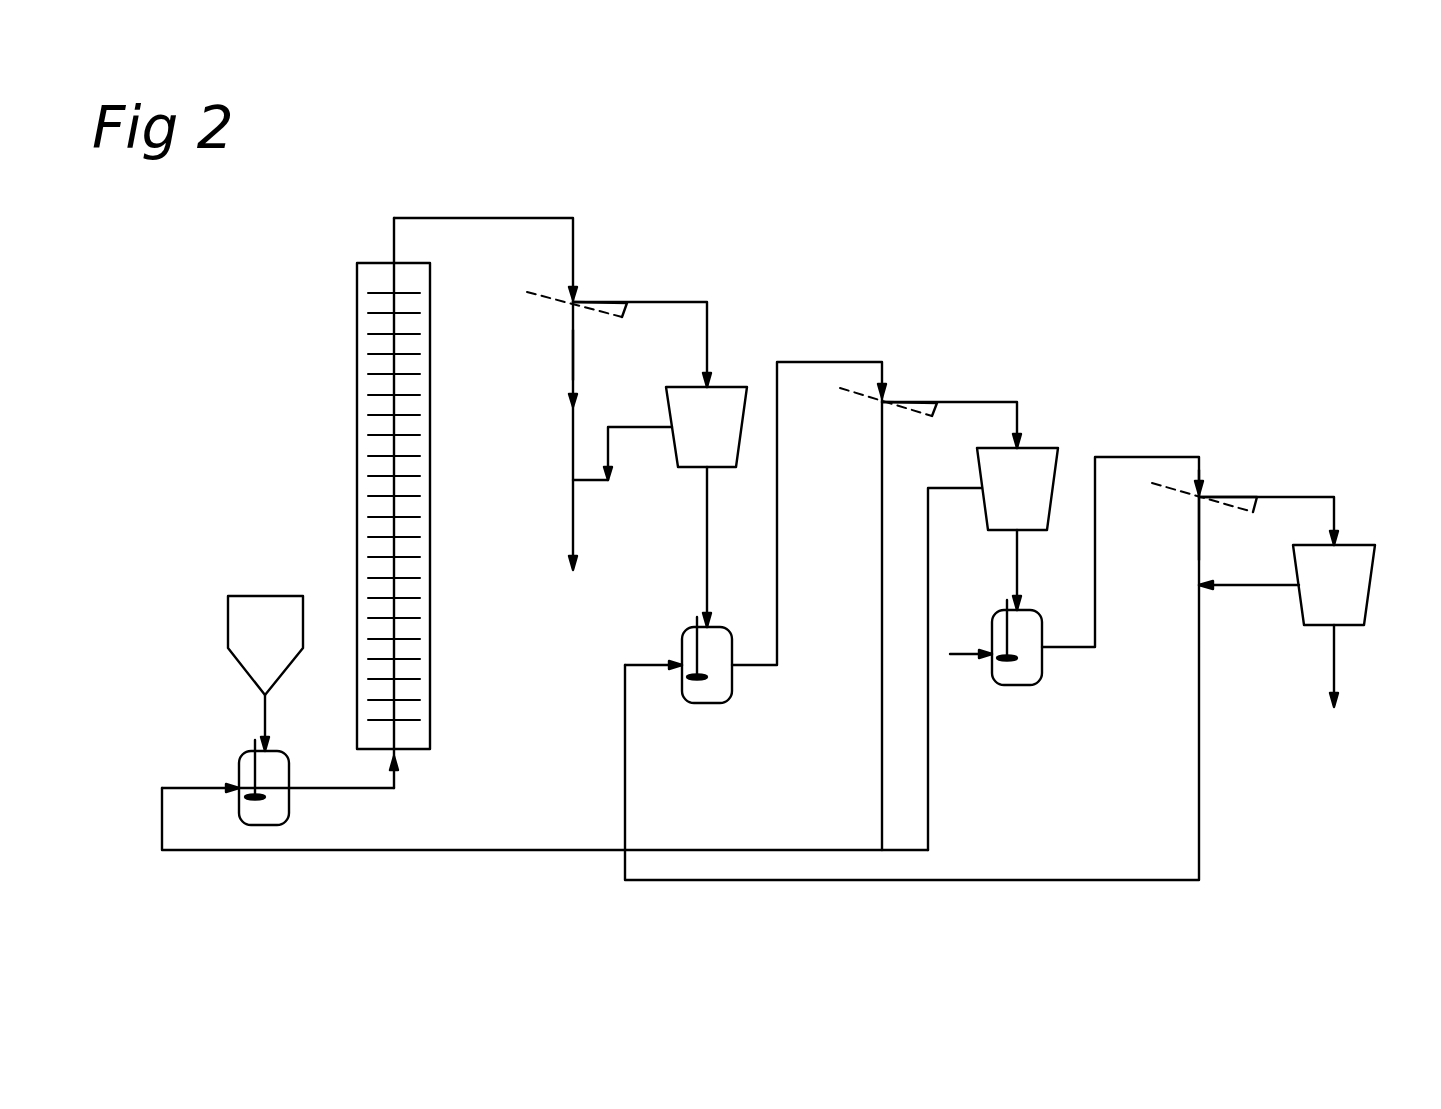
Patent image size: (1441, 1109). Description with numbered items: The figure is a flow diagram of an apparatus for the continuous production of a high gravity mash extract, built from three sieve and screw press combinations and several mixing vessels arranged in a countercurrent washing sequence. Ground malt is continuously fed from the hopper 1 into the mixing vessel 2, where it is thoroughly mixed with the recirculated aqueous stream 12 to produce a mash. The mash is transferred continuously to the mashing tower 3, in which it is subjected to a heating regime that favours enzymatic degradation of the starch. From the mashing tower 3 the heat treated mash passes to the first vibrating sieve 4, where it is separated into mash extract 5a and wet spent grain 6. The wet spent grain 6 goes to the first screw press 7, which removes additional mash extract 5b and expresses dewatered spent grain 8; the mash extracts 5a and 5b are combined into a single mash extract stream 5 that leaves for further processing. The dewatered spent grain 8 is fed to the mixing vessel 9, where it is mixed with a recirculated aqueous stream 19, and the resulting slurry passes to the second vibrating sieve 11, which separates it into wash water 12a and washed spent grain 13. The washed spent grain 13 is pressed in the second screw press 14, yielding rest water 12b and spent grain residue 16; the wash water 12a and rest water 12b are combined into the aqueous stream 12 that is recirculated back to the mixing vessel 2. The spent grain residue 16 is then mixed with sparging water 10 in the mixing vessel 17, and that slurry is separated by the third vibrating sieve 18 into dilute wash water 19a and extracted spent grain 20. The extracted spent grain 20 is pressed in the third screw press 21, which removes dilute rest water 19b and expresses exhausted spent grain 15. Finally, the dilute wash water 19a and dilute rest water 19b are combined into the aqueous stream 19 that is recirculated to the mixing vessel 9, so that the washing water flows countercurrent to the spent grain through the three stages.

The hopper 1 is at (266, 612).
The mixing vessel 2 is at (275, 810).
The mashing tower 3 is at (420, 364).
The first vibrating sieve 4 is at (573, 302).
The mash extract stream 5 is at (573, 520).
The mash extract 5a is at (573, 350).
The additional mash extract 5b is at (610, 452).
The wet spent grain 6 is at (672, 302).
The first screw press 7 is at (722, 395).
The dewatered spent grain 8 is at (707, 545).
The mixing vessel 9 is at (722, 632).
The sparging water 10 is at (958, 662).
The second vibrating sieve 11 is at (882, 402).
The recirculated aqueous stream 12 is at (565, 850).
The wash water 12a is at (882, 620).
The rest water 12b is at (928, 732).
The washed spent grain 13 is at (987, 402).
The second screw press 14 is at (1040, 460).
The exhausted spent grain 15 is at (1334, 660).
The spent grain residue 16 is at (1017, 560).
The mixing vessel 17 is at (1035, 663).
The third vibrating sieve 18 is at (1197, 498).
The recirculated aqueous stream 19 is at (1030, 878).
The dilute wash water 19a is at (1199, 540).
The dilute rest water 19b is at (1257, 590).
The extracted spent grain 20 is at (1334, 517).
The third screw press 21 is at (1366, 585).